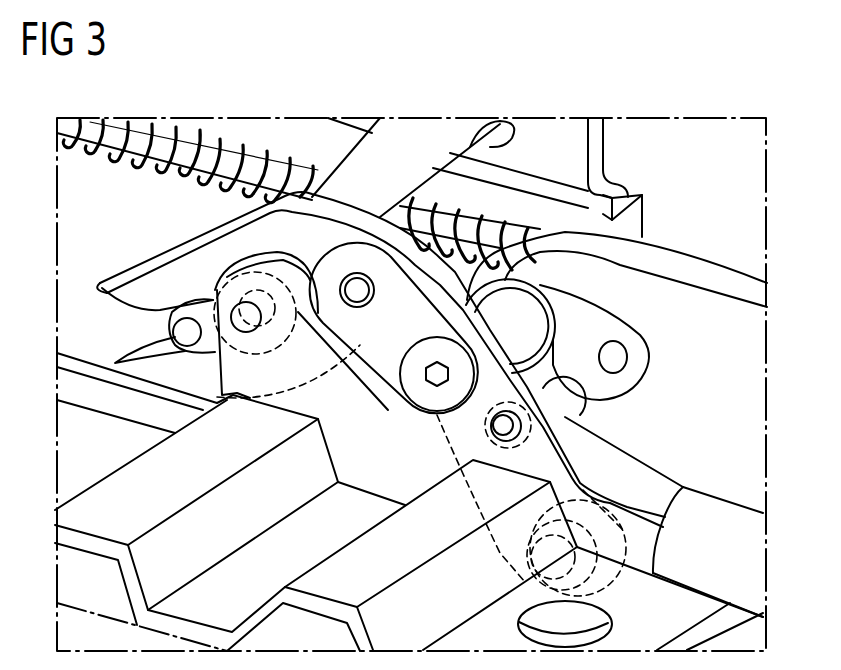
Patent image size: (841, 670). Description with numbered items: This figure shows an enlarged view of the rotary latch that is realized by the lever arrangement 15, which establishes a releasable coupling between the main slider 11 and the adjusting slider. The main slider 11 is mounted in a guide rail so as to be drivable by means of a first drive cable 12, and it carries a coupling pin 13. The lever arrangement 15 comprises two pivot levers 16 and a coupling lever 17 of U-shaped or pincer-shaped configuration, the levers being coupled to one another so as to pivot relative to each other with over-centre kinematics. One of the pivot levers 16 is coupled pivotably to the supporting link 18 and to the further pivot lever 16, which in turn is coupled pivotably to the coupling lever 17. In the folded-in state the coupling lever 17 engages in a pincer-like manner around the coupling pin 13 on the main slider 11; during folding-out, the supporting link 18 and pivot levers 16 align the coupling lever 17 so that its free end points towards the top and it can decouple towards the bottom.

The main slider 11 is at (563, 125).
The first drive cable 12 is at (186, 140).
The coupling pin 13 is at (417, 125).
The lever arrangement 15 is at (72, 211).
The pivot lever 16 is at (465, 450).
The coupling lever 17 is at (173, 260).
The supporting link 18 is at (758, 378).